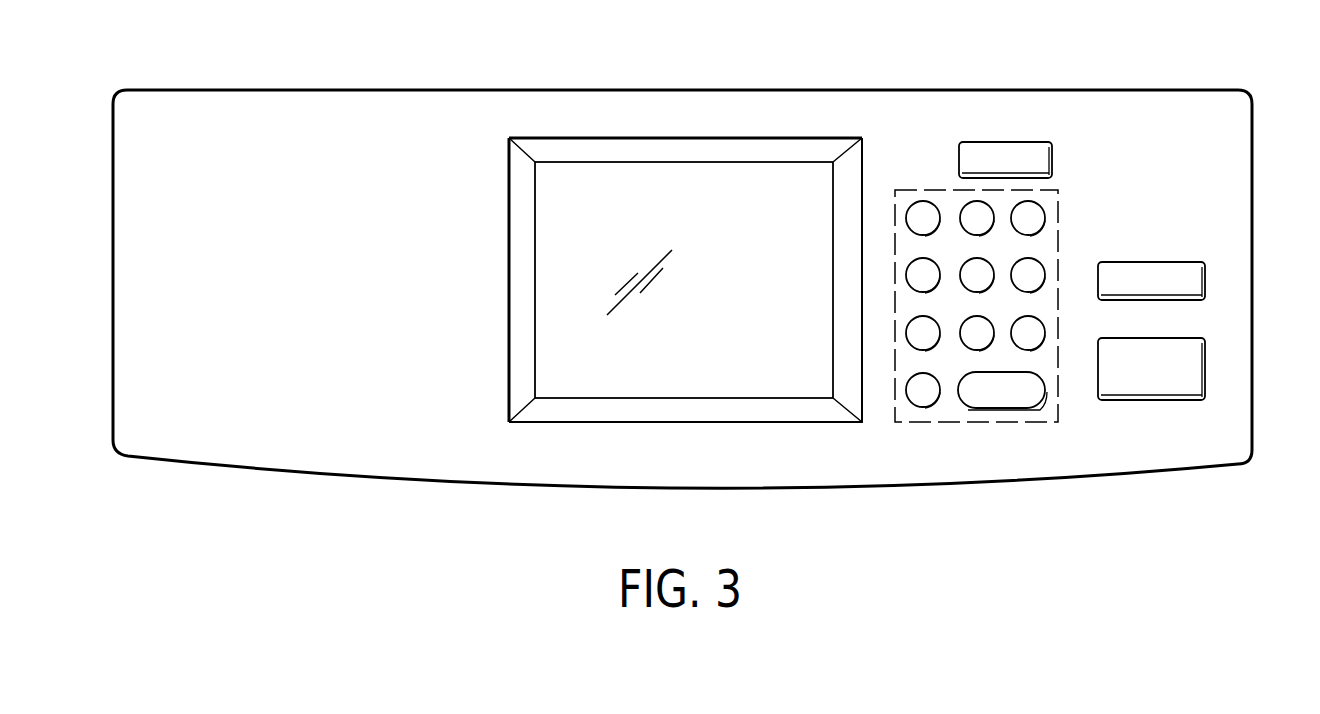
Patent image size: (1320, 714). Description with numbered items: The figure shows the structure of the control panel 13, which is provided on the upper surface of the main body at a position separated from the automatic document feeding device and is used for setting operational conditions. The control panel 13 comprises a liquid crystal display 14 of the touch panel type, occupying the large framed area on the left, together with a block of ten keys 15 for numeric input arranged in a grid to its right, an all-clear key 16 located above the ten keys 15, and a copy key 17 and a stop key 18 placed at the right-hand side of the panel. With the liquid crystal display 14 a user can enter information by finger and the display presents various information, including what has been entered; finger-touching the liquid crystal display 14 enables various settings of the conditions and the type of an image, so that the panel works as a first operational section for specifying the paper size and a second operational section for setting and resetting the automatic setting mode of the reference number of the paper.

The control panel 13 is at (763, 92).
The liquid crystal display 14 is at (580, 177).
The ten keys 15 is at (927, 188).
The all-clear key 16 is at (1013, 141).
The copy key 17 is at (1205, 367).
The stop key 18 is at (1205, 280).